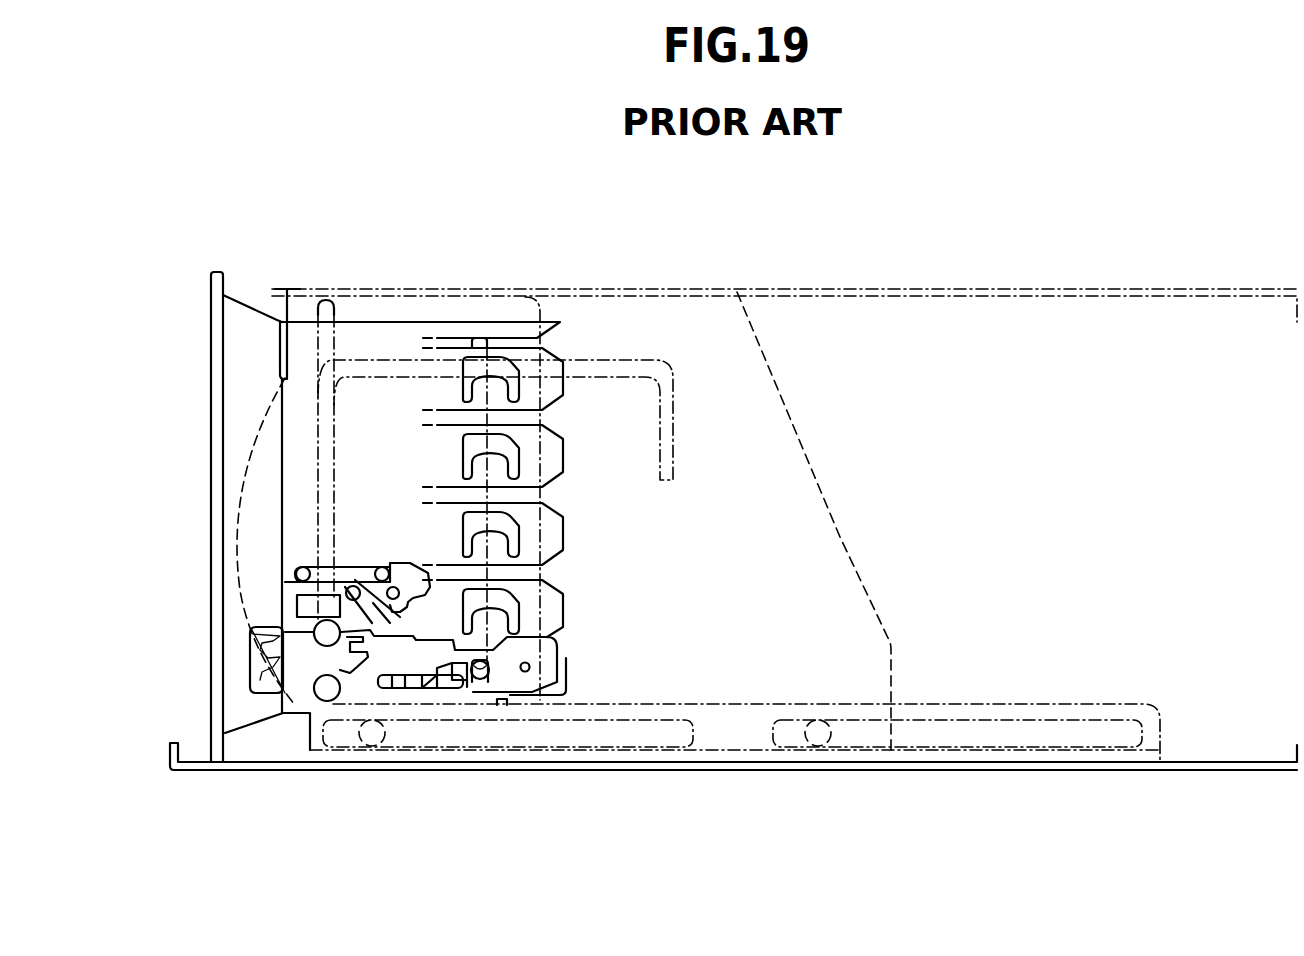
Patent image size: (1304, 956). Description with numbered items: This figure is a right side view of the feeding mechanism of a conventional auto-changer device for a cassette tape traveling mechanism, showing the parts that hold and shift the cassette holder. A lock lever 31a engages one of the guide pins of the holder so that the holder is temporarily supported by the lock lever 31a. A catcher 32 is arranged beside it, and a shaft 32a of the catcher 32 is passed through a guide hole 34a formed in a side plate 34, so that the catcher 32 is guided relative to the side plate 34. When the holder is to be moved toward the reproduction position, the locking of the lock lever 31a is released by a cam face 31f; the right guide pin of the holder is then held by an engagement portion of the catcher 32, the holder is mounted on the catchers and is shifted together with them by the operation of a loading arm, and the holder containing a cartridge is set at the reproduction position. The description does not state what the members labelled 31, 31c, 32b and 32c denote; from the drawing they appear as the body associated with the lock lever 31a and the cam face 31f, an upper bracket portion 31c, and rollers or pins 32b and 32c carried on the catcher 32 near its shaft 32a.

The holding claw members 31 is at (563, 530).
The lock lever 31a is at (392, 563).
The top bracket of claw member 31c is at (444, 338).
The cam face 31f is at (533, 511).
The catcher 32 is at (557, 650).
The shaft 32a is at (328, 697).
The upper roller of slider 32b is at (307, 621).
The pin of slider 32c is at (482, 679).
The side plate 34 is at (823, 553).
The guide hole 34a is at (618, 360).